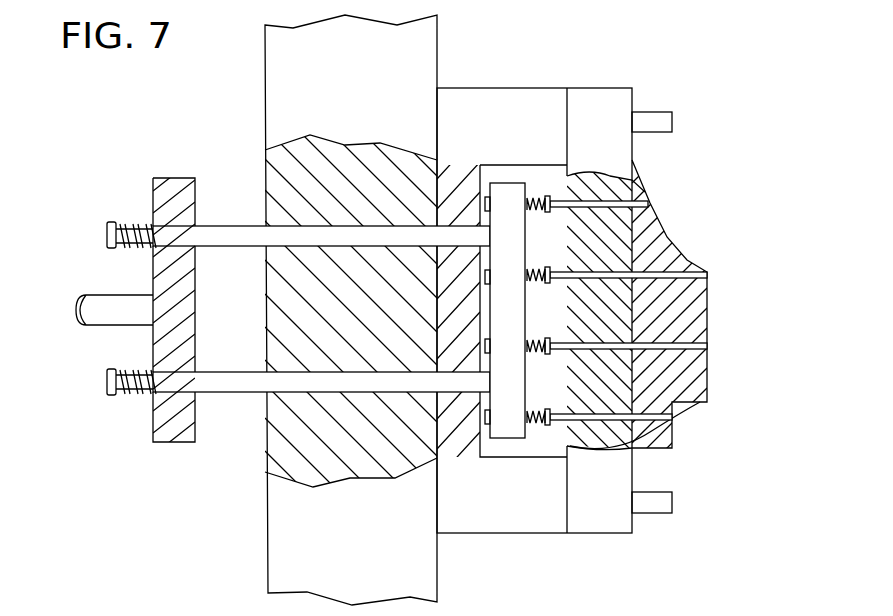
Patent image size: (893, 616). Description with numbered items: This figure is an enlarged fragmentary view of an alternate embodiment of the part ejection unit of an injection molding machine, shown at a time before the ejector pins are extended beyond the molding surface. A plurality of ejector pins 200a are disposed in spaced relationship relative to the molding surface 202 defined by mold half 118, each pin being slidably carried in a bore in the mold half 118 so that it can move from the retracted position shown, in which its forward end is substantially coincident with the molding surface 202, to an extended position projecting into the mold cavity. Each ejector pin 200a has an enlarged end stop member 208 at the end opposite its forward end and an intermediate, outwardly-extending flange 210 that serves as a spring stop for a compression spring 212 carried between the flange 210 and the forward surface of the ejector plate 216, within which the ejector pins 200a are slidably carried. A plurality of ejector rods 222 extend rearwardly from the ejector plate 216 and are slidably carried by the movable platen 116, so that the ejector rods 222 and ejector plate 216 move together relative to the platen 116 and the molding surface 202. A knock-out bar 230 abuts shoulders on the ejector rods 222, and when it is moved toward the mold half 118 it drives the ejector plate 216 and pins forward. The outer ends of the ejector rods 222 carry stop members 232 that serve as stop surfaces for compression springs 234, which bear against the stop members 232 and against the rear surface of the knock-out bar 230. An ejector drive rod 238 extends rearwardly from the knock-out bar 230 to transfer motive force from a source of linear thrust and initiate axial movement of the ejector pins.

The movable platen 116 is at (367, 70).
The mold half 118 is at (608, 98).
The ejector pins 200a is at (688, 258).
The molding surface 202 is at (706, 315).
The enlarged end stop member 208 is at (481, 178).
The intermediate outwardly-extending flange 210 is at (549, 200).
The compression spring 212 is at (535, 198).
The ejector plate 216 is at (510, 190).
The ejector rods 222 is at (240, 228).
The knock-out bar 230 is at (172, 178).
The stop members 232 is at (107, 236).
The compression springs 234 is at (135, 230).
The ejector drive rod 238 is at (102, 320).